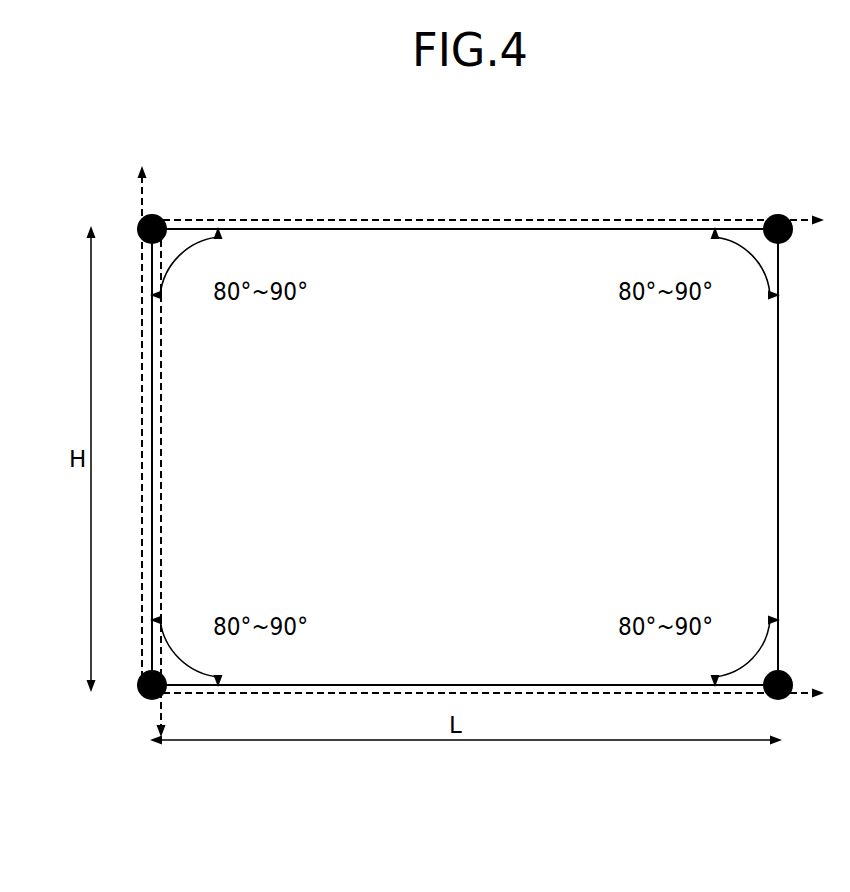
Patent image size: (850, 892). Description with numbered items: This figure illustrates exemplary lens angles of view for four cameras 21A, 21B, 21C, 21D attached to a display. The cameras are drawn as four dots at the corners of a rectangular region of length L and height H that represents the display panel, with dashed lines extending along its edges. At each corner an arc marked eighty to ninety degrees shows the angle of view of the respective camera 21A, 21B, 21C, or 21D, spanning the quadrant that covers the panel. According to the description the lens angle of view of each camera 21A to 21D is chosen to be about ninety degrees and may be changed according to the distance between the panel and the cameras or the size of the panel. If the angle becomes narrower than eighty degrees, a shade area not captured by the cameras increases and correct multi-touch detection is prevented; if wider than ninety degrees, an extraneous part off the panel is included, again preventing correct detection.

The camera 21A is at (146, 218).
The camera 21B is at (784, 218).
The camera 21C is at (148, 698).
The camera 21D is at (786, 698).